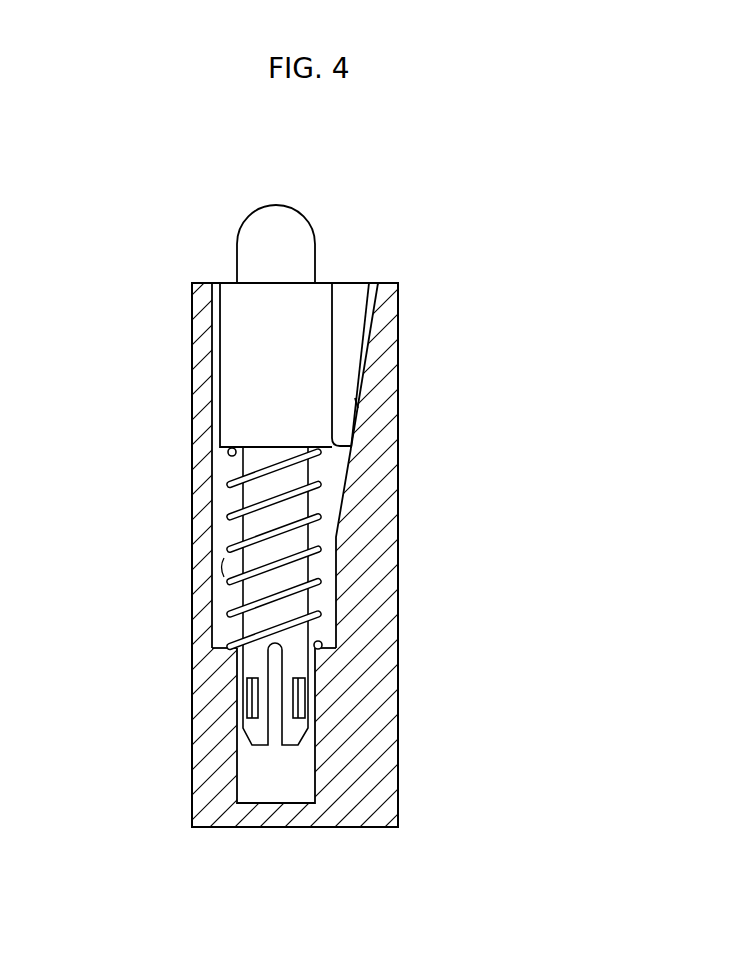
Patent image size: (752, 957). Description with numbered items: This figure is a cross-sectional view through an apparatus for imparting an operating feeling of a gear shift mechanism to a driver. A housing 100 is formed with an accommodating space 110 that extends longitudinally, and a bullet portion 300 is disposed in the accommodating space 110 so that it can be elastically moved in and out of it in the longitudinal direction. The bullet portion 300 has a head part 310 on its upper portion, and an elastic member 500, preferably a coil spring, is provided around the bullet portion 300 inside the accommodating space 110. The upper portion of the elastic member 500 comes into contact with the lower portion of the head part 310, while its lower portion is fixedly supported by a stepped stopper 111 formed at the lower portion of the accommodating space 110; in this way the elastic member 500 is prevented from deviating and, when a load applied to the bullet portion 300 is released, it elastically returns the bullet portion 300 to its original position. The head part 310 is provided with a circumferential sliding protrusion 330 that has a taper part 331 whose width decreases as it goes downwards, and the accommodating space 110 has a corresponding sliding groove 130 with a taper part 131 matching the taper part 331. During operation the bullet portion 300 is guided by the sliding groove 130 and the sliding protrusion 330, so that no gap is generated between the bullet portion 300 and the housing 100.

The housing 100 is at (380, 693).
The accommodating space 110 is at (222, 565).
The stepped stopper 111 is at (221, 646).
The sliding groove 130 is at (357, 405).
The taper part 131 is at (363, 316).
The bullet portion 300 is at (230, 210).
The head part 310 is at (235, 375).
The sliding protrusion 330 is at (347, 368).
The taper part 331 is at (363, 343).
The elastic member 500 is at (233, 513).